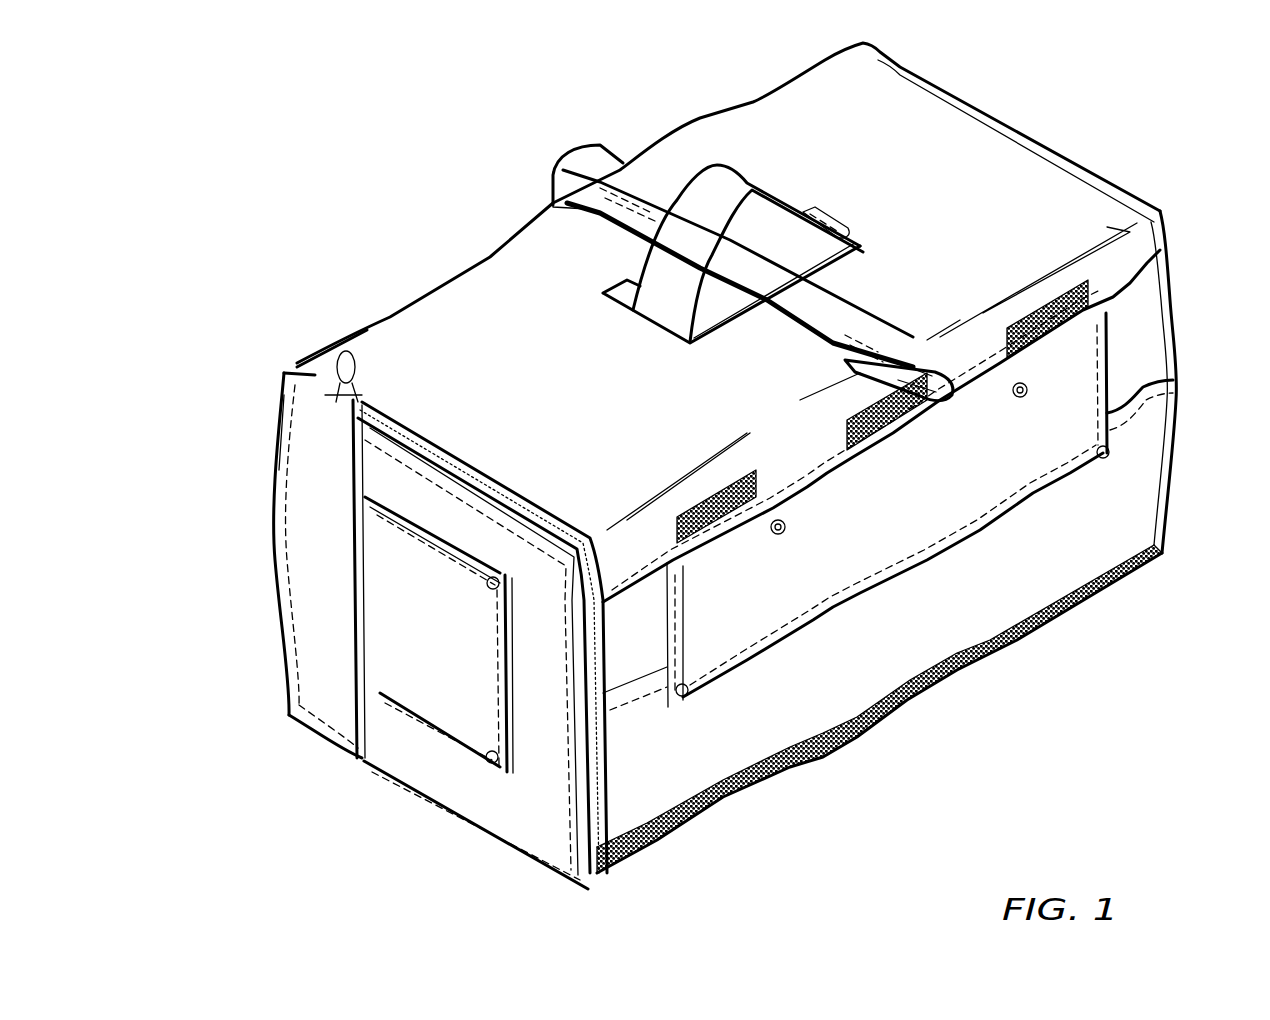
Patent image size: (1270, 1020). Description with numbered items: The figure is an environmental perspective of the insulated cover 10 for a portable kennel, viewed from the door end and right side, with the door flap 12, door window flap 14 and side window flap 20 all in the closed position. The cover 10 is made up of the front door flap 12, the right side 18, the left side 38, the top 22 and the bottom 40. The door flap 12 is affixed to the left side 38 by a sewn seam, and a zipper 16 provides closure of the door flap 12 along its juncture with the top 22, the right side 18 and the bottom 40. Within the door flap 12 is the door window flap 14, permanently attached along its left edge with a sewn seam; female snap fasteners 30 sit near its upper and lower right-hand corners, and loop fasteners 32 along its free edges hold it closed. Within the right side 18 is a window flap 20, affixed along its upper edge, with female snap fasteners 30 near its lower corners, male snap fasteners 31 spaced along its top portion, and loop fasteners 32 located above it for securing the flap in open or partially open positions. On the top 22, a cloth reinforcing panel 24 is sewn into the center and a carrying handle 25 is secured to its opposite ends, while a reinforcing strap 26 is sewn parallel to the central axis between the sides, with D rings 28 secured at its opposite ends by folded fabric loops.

The insulated cover 10 is at (380, 150).
The door flap 12 is at (322, 660).
The door window flap 14 is at (440, 655).
The zipper 16 is at (428, 432).
The right side 18 is at (950, 636).
The window flap 20 is at (906, 538).
The top 22 is at (935, 206).
The cloth reinforcing panel 24 is at (706, 340).
The carrying handle 25 is at (740, 182).
The reinforcing strap 26 is at (850, 305).
The D rings 28 is at (557, 195).
The snap fasteners (female) 30 is at (500, 583).
The snap fasteners (male) 31 is at (1030, 393).
The loop fasteners 32 is at (845, 440).
The left side 38 is at (278, 468).
The bottom 40 is at (805, 775).